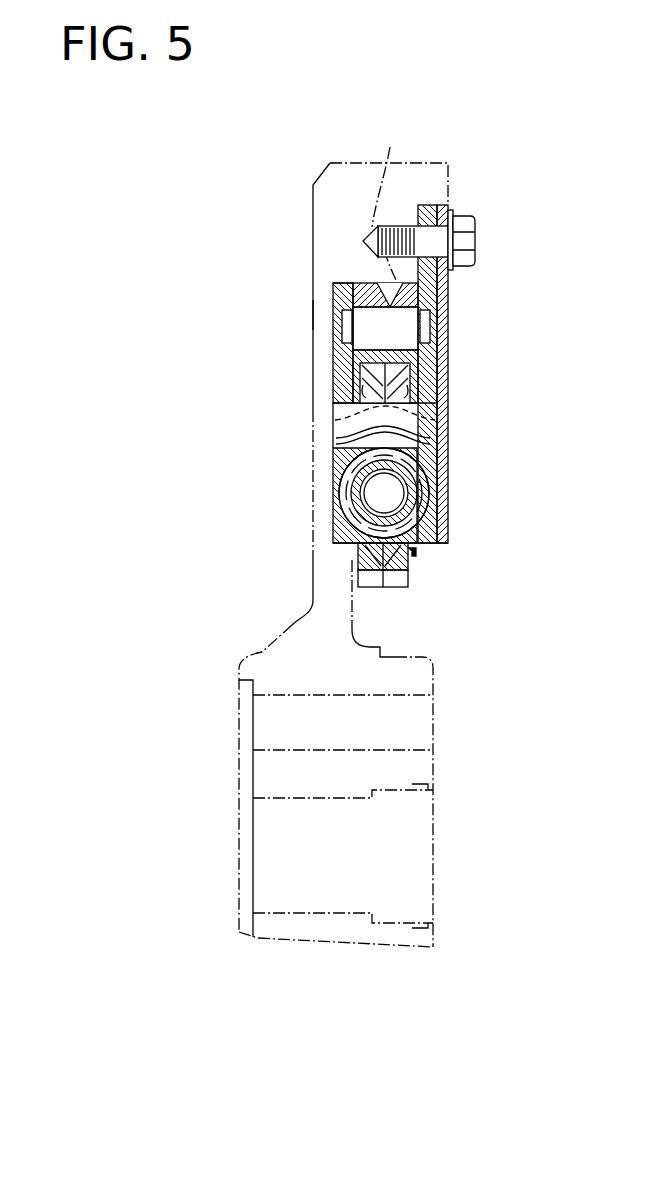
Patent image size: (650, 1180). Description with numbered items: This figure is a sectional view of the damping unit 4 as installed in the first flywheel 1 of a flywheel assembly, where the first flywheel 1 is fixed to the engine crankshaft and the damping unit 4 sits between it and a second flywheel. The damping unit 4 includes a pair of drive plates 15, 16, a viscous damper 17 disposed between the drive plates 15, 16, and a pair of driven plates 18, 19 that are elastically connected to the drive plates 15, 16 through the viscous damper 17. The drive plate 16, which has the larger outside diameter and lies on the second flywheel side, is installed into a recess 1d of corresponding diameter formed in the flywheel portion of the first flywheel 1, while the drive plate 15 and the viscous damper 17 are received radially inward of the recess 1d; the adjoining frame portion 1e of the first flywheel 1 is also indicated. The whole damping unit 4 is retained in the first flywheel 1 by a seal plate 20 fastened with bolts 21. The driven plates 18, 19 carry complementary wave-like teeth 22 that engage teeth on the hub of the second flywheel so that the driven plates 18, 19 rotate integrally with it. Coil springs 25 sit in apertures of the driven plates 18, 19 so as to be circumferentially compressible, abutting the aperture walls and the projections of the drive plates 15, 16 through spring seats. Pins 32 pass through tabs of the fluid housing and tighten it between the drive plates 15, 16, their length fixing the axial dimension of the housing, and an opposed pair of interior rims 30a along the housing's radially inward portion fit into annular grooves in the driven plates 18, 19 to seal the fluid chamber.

The first flywheel 1 is at (303, 622).
The recess 1d is at (432, 205).
The frame portion 1e is at (388, 194).
The damping unit 4 is at (310, 318).
The drive plate 15 is at (342, 283).
The drive plate 16 is at (428, 293).
The viscous damper 17 is at (362, 277).
The driven plate 18 is at (362, 552).
The driven plate 19 is at (410, 563).
The seal plate 20 is at (447, 377).
The bolts 21 is at (468, 217).
The wave-like teeth 22 is at (370, 582).
The coil springs 25 is at (427, 490).
The interior rims 30a is at (335, 412).
The pins 32 is at (337, 333).